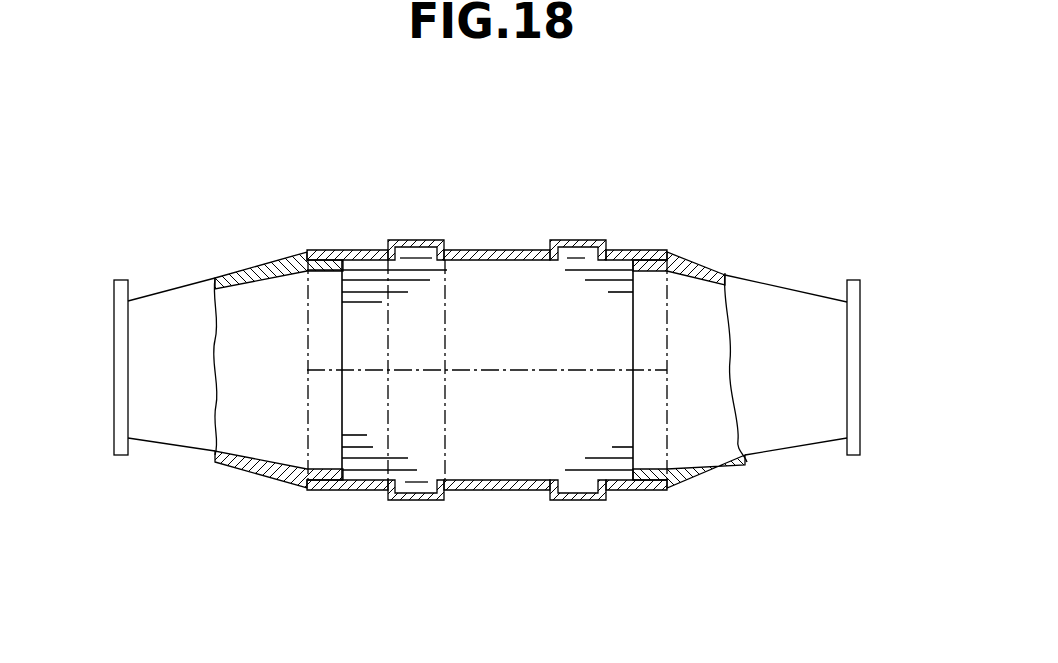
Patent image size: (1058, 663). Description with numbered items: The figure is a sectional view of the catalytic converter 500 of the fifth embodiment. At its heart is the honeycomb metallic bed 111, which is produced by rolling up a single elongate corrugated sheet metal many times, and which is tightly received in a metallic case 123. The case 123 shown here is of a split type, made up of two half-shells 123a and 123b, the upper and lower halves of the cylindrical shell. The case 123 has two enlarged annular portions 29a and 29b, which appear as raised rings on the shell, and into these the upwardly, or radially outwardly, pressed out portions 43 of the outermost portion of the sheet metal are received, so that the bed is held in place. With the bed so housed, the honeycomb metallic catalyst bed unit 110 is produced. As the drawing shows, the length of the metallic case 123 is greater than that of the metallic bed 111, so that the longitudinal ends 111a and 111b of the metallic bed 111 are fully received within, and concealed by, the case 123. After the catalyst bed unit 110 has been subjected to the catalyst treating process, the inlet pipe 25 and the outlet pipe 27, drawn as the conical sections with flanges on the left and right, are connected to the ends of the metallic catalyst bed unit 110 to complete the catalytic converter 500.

The catalytic converter 500 is at (763, 113).
The honeycomb metallic catalyst bed unit 110 is at (491, 246).
The metallic case 123 is at (516, 250).
The half-shell 123a is at (487, 211).
The half-shell 123b is at (633, 492).
The enlarged annular portion 29a is at (415, 238).
The enlarged annular portion 29b is at (586, 241).
The honeycomb metallic bed 111 is at (475, 393).
The longitudinal end of metallic bed 111a is at (342, 327).
The longitudinal end of metallic bed 111b is at (635, 332).
The pressed out portions 43 is at (410, 250).
The inlet pipe 25 is at (243, 467).
The outlet pipe 27 is at (723, 470).